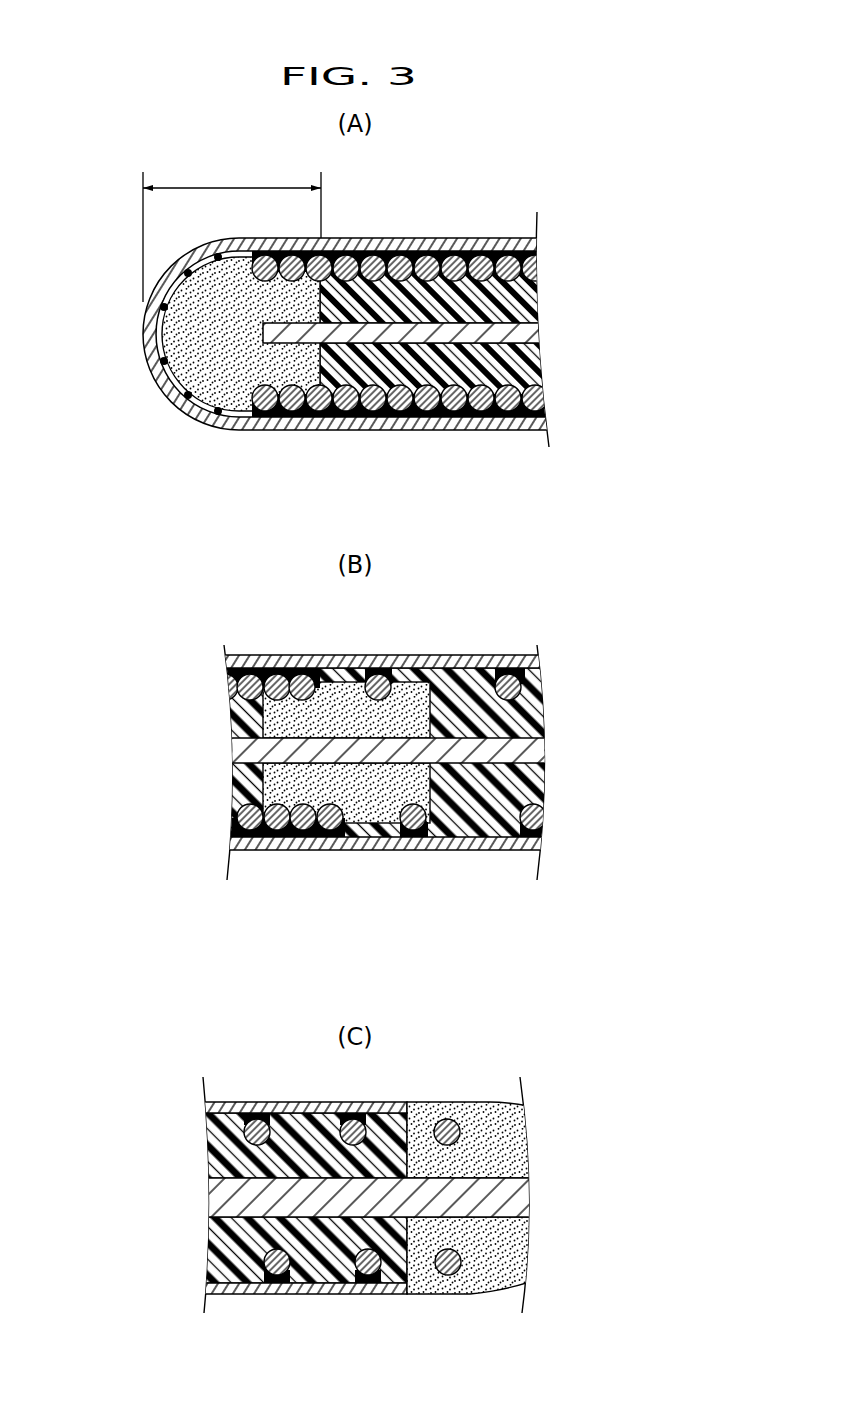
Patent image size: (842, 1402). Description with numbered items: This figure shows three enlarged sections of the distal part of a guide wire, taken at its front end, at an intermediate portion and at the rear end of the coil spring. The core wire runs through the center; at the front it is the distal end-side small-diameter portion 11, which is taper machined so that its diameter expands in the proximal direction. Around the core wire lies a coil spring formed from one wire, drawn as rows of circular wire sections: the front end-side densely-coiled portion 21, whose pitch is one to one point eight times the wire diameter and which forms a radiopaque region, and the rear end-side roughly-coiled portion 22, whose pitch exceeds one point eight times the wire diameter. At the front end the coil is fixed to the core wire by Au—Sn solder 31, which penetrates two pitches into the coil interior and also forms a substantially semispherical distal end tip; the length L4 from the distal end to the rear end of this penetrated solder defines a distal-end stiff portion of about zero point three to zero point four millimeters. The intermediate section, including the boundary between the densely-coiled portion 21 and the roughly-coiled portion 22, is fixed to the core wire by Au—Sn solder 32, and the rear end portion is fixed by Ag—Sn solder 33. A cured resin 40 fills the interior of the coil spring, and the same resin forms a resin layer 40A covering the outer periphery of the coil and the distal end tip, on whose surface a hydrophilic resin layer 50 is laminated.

The distal end-side small-diameter portion 11 is at (500, 323).
The front end-side densely-coiled portion 21 is at (427, 257).
The rear end-side roughly-coiled portion 22 is at (508, 848).
The Au—Sn solder 31 is at (207, 425).
The Au—Sn solder 32 is at (375, 825).
The Ag—Sn solder 33 is at (485, 1250).
The cured resin 40 is at (497, 363).
The resin layer 40A is at (177, 383).
The hydrophilic resin layer 50 is at (277, 425).
The length of distal-end stiff portion L4 is at (232, 230).